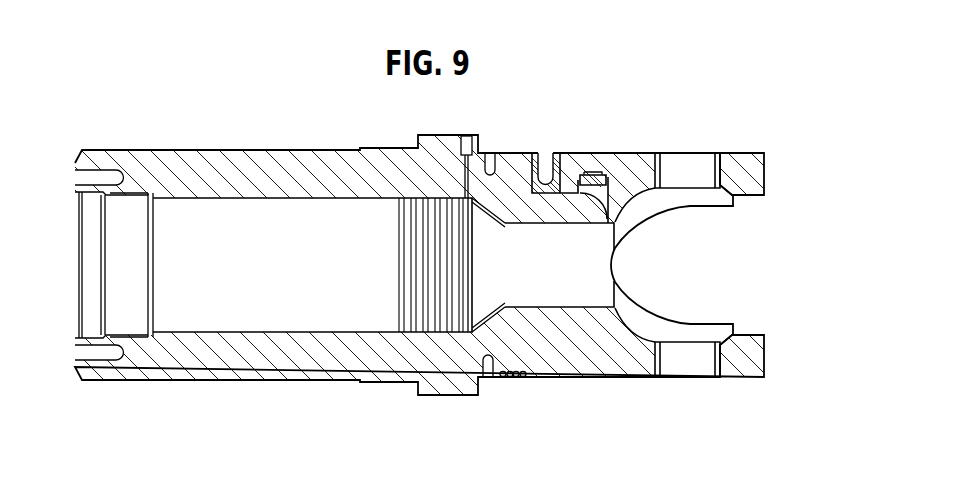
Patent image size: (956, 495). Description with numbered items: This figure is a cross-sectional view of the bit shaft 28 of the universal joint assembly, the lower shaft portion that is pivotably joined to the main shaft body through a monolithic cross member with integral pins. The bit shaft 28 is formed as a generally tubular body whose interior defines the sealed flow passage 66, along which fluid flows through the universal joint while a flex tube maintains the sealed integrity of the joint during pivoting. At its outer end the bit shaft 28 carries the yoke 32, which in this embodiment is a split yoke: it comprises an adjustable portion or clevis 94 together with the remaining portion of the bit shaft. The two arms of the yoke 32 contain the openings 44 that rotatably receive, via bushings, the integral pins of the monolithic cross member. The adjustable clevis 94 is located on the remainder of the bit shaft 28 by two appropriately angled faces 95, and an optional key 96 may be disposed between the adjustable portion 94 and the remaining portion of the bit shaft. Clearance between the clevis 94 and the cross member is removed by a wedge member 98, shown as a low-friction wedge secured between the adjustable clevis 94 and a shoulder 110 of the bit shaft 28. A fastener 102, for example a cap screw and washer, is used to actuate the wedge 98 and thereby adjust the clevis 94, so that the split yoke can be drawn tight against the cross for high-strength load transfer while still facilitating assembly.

The bit shaft portion 28 is at (229, 137).
The yoke 32 is at (746, 386).
The openings 44 is at (692, 170).
The sealed flow passage 66 is at (360, 277).
The adjustable portion/clevis 94 is at (742, 152).
The angled faces 95 is at (597, 199).
The key 96 is at (594, 173).
The wedge member 98 is at (532, 173).
The fastener 102 is at (547, 160).
The shoulder 110 is at (543, 195).